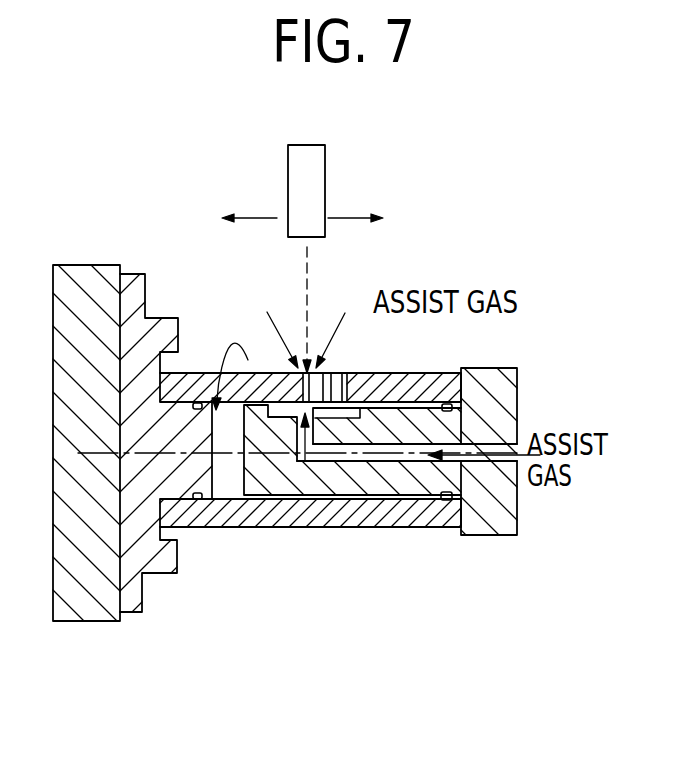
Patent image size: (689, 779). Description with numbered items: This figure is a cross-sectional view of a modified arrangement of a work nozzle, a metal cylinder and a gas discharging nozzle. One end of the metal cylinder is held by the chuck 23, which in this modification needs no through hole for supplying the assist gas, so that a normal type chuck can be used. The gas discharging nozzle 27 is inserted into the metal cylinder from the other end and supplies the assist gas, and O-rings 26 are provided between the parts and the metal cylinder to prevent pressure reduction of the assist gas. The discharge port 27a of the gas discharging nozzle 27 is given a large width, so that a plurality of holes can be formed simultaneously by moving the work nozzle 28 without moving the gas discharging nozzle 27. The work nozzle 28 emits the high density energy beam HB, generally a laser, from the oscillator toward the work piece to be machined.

The chuck 23 is at (133, 292).
The O-rings 26 is at (447, 404).
The gas discharging nozzle 27 is at (405, 417).
The discharge port 27a is at (280, 408).
The work nozzle 28 is at (317, 186).
The high density energy beam HB is at (309, 268).